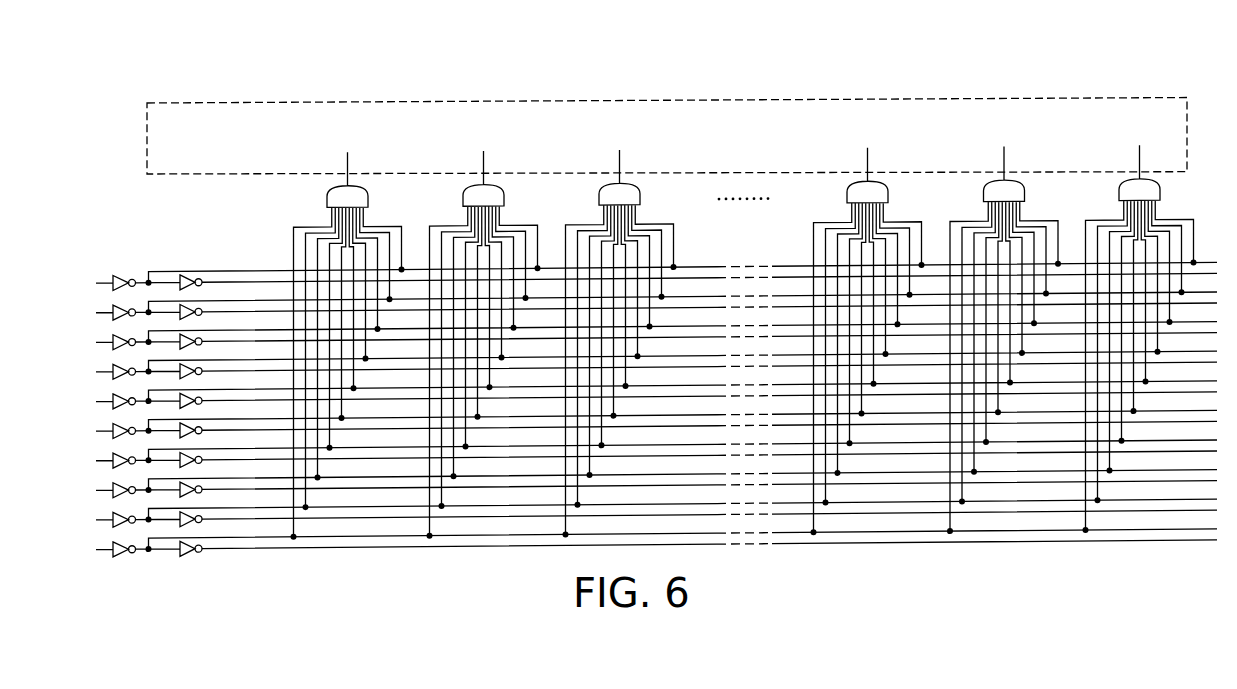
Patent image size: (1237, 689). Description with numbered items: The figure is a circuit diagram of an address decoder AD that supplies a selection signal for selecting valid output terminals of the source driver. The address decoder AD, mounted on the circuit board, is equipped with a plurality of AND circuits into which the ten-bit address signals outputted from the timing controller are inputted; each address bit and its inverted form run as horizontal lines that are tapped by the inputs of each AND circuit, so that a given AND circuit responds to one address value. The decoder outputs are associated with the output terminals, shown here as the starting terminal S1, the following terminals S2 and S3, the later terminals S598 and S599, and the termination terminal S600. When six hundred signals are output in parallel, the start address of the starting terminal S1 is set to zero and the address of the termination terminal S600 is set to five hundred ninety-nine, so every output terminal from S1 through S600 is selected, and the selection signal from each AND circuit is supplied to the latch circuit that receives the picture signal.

The address decoder AD is at (242, 101).
The starting terminal S1 is at (348, 324).
The output terminal S2 is at (484, 323).
The output terminal S3 is at (620, 321).
The output terminal S598 is at (868, 319).
The output terminal S599 is at (1004, 318).
The termination terminal S600 is at (1140, 317).